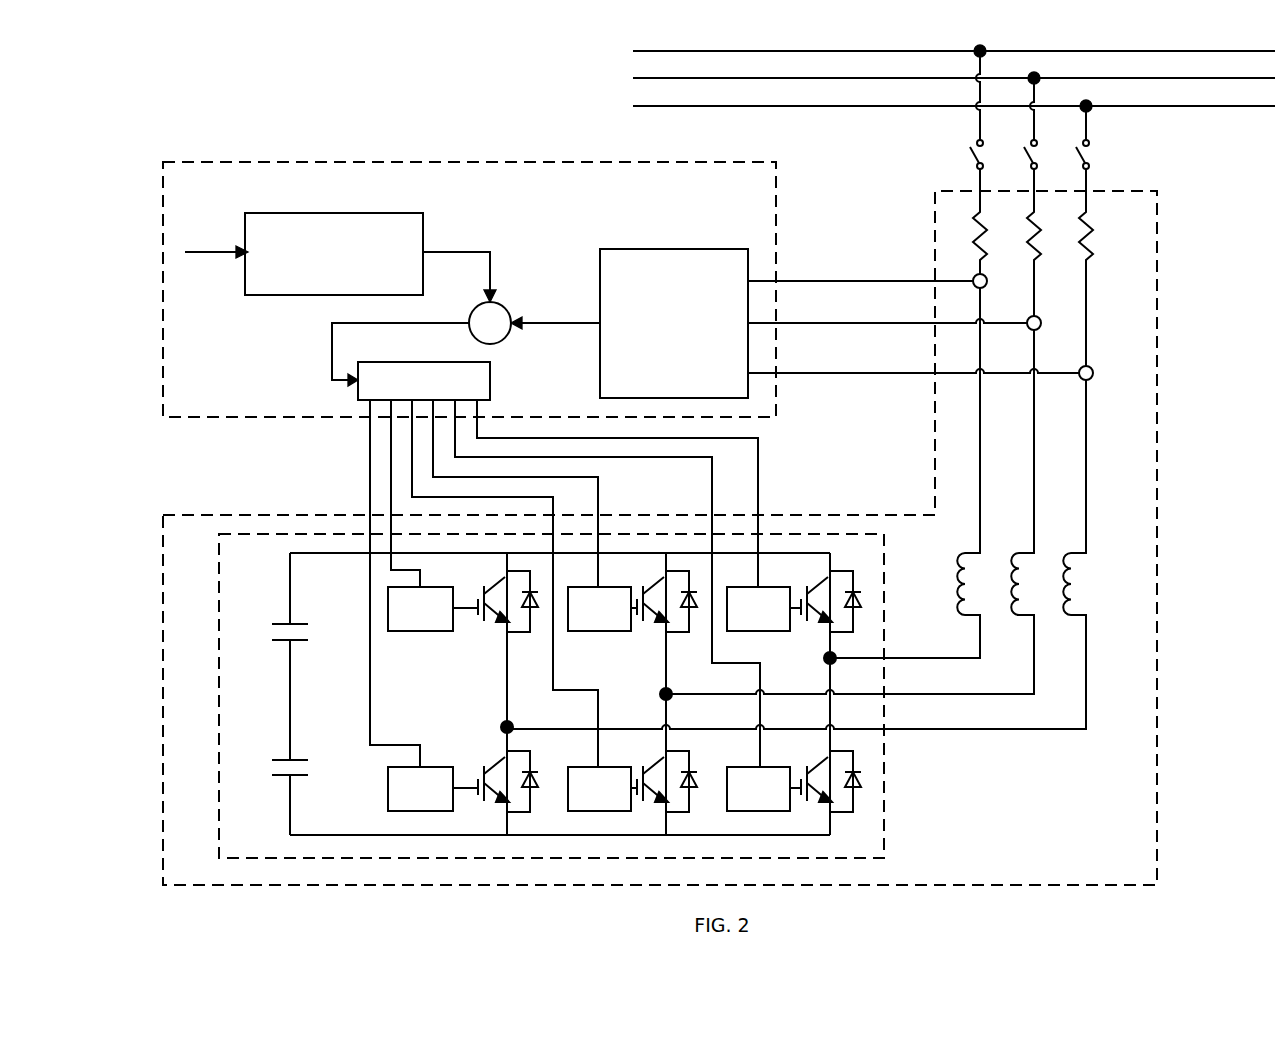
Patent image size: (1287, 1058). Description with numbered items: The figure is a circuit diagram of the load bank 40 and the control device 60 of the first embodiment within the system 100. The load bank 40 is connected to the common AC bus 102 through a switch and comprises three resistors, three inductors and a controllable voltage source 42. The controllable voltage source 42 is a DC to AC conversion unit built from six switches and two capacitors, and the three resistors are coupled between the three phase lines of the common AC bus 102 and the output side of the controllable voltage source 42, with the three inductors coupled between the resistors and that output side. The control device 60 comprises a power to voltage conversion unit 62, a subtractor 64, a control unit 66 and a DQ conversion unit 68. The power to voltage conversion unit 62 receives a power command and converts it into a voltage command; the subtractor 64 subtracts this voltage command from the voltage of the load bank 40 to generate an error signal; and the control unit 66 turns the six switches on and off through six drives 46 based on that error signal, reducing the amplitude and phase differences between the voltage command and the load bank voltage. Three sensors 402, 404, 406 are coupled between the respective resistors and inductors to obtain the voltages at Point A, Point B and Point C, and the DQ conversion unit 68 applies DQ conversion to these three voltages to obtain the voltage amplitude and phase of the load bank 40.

The system 100 is at (370, 124).
The common AC bus 102 is at (1185, 106).
The control device 60 is at (466, 161).
The power to voltage conversion unit 62 is at (292, 296).
The subtractor 64 is at (506, 312).
The control unit 66 is at (358, 392).
The DQ conversion unit 68 is at (600, 374).
The load bank 40 is at (1157, 358).
The controllable voltage source 42 is at (884, 768).
The drive 46 is at (423, 632).
The sensor 402 is at (973, 278).
The sensor 404 is at (1027, 320).
The sensor 406 is at (1079, 370).